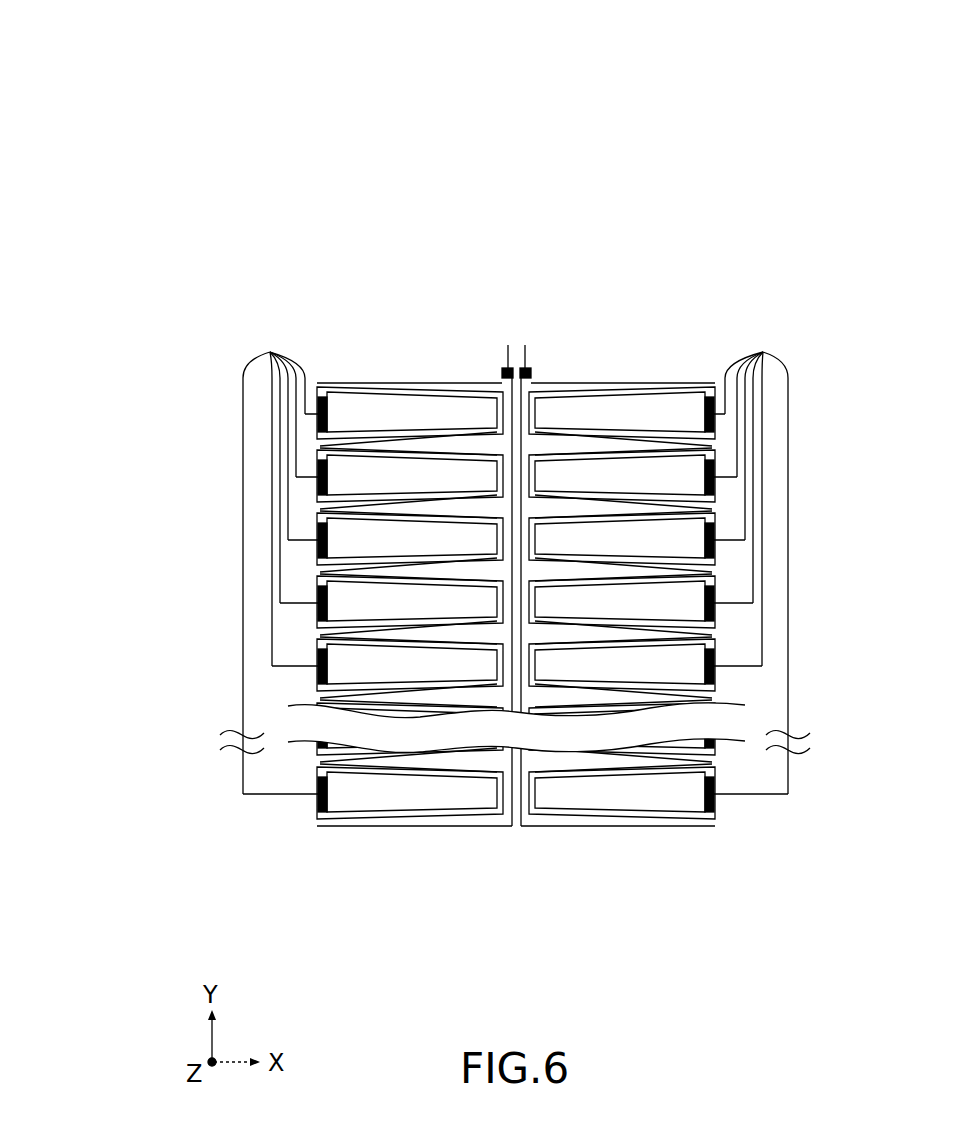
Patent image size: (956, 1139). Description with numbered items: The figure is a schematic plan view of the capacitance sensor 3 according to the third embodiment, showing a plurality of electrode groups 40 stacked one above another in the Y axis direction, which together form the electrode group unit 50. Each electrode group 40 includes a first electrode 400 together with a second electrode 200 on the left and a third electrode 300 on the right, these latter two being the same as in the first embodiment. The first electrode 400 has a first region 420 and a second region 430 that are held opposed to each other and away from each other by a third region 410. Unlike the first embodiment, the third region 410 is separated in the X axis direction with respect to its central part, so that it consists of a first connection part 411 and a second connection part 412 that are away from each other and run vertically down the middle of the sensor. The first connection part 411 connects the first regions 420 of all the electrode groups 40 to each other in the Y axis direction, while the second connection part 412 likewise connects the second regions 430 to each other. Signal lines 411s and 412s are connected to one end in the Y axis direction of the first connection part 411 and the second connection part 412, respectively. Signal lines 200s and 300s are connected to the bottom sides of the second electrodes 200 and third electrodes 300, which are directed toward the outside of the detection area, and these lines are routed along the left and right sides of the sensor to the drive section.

The capacitance sensor 3 is at (523, 84).
The electrode group 40 is at (720, 184).
The electrode group unit 50 is at (148, 410).
The second electrode 200 is at (360, 415).
The third electrode 300 is at (675, 420).
The first electrode 400 is at (675, 231).
The third region 410 is at (633, 278).
The first connection part 411 is at (507, 346).
The second connection part 412 is at (525, 346).
The signal line 411s is at (503, 368).
The signal line 412s is at (530, 368).
The first region 420 is at (407, 380).
The second region 430 is at (638, 382).
The signal line 200s is at (263, 556).
The signal line 300s is at (767, 556).